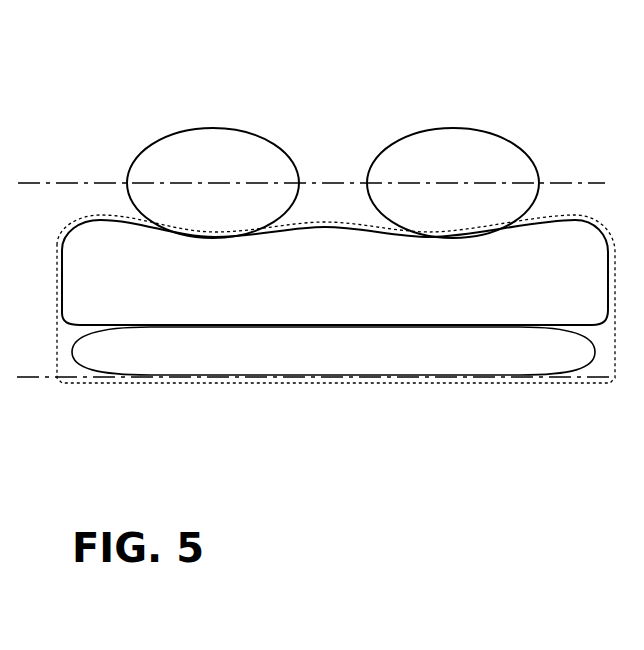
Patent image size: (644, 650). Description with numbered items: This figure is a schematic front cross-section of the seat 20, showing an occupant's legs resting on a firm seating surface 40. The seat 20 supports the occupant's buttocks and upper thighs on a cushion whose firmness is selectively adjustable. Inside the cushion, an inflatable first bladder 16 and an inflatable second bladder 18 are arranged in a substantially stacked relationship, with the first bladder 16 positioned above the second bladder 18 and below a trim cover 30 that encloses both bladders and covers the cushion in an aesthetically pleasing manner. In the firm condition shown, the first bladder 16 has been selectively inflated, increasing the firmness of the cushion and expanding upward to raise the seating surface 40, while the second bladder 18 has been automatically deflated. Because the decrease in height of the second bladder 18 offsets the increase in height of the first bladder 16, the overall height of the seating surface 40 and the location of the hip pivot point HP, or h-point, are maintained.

The hip pivot point HP is at (50, 183).
The first bladder 16 is at (537, 250).
The second bladder 18 is at (170, 358).
The seat 20 is at (460, 397).
The trim cover 30 is at (57, 323).
The seating surface 40 is at (327, 222).